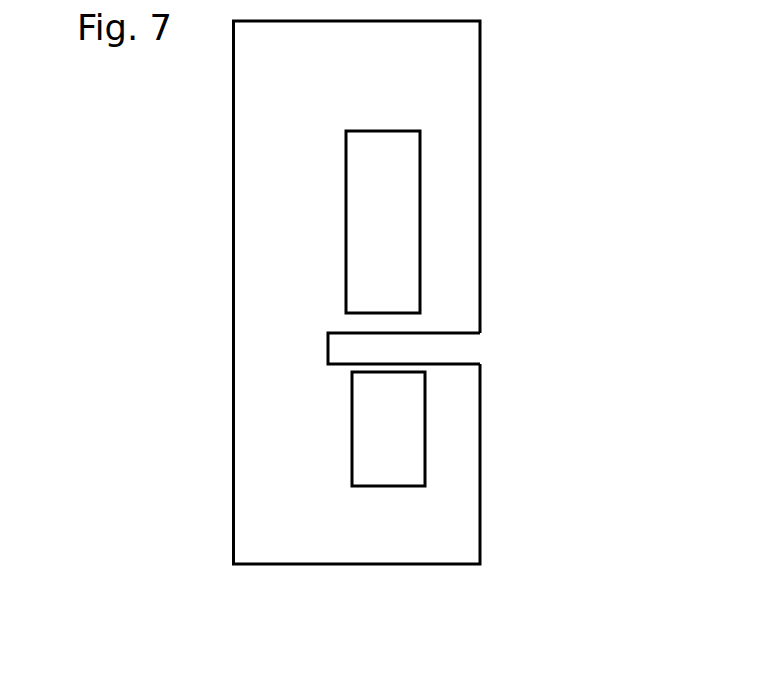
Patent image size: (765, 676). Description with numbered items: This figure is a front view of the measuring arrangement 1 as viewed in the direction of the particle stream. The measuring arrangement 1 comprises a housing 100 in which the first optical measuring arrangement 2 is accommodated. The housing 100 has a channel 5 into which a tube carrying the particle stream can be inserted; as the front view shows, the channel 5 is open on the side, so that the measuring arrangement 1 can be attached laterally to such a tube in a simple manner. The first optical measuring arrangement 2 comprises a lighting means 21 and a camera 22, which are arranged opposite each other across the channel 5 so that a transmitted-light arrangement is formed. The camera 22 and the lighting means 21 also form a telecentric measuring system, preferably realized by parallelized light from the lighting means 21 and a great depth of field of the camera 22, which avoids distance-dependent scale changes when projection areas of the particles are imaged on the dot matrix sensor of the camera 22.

The housing 100 is at (480, 490).
The measuring arrangement 1 is at (632, 563).
The channel 5 is at (453, 362).
The camera 22 is at (420, 239).
The lighting means 21 is at (425, 445).
The first optical measuring arrangement 2 is at (402, 530).